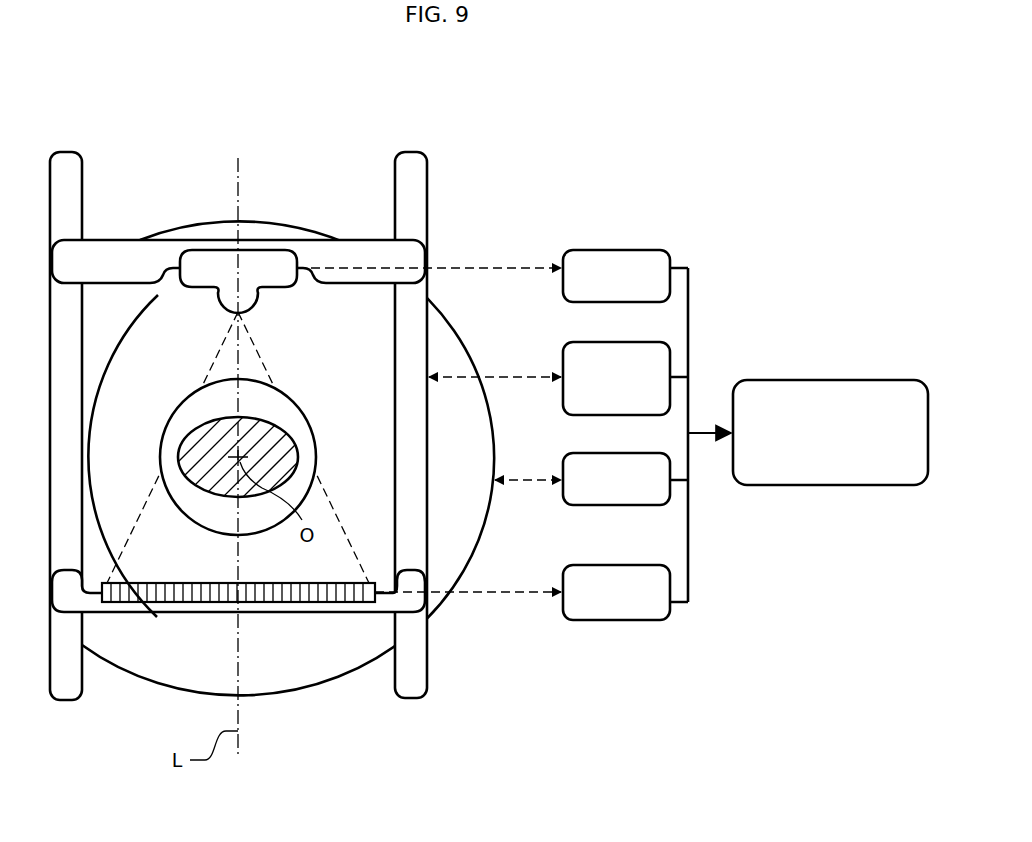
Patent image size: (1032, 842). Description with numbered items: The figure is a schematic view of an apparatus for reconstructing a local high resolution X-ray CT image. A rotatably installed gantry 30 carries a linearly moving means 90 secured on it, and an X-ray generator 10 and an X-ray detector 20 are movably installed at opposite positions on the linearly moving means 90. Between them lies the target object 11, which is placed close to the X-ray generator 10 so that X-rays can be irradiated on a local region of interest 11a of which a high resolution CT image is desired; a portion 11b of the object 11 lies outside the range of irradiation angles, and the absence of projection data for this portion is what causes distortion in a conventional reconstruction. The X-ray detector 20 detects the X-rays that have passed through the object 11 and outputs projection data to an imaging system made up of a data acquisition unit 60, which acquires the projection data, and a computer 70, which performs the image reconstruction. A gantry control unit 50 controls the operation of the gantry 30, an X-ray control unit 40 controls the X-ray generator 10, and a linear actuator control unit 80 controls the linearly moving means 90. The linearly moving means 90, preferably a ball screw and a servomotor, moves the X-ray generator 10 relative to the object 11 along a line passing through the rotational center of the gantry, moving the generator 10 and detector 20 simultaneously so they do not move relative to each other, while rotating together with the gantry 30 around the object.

The X-ray generator 10 is at (212, 256).
The object 11 is at (221, 452).
The local region of interest 11a is at (183, 454).
The portion of the target object outside the range of irradiation angles 11b is at (170, 496).
The X-ray detector 20 is at (185, 603).
The gantry 30 is at (275, 222).
The X-ray control unit 40 is at (616, 249).
The gantry control unit 50 is at (670, 488).
The data acquisition unit 60 is at (670, 584).
The computer 70 is at (862, 380).
The linear actuator control unit 80 is at (672, 365).
The linearly moving means 90 is at (410, 150).